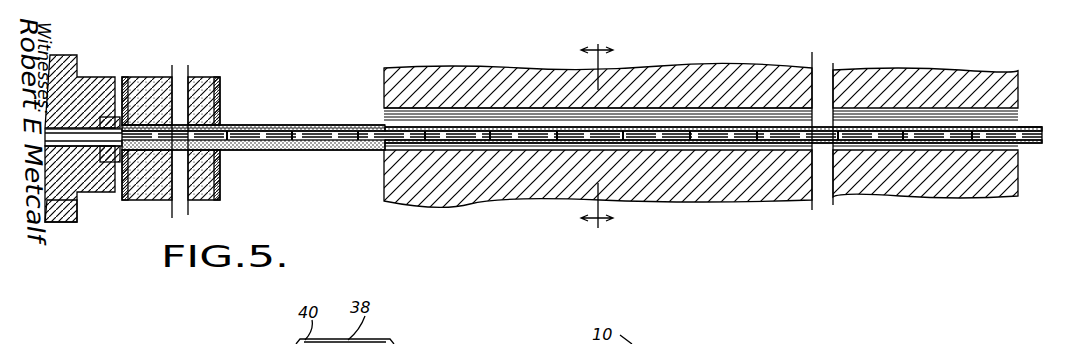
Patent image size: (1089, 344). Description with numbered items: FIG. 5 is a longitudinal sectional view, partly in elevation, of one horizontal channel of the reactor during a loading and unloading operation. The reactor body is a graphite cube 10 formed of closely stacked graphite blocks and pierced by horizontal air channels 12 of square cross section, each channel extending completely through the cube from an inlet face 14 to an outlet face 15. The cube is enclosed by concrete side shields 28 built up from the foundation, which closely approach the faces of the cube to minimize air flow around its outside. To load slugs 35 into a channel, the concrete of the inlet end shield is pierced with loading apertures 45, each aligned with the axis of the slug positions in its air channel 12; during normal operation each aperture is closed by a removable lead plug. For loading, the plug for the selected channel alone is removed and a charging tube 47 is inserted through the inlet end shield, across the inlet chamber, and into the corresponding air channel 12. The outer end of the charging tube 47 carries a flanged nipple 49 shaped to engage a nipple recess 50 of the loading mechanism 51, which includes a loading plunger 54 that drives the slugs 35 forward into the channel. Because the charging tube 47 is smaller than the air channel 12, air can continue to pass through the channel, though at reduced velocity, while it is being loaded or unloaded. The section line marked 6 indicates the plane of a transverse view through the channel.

The loading plunger 54 is at (68, 54).
The loading mechanism 51 is at (48, 222).
The nipple recess 50 is at (112, 98).
The flanged nipple 49 is at (105, 165).
The side shield 28 is at (150, 77).
The inlet face 14 is at (380, 152).
The charging tube 47 is at (290, 125).
The loading aperture 45 is at (228, 125).
The slug 35 is at (515, 138).
The outlet face 15 is at (1024, 146).
The air channel 12 is at (455, 108).
The graphite cube 10 is at (687, 208).
The section line 6 is at (597, 140).